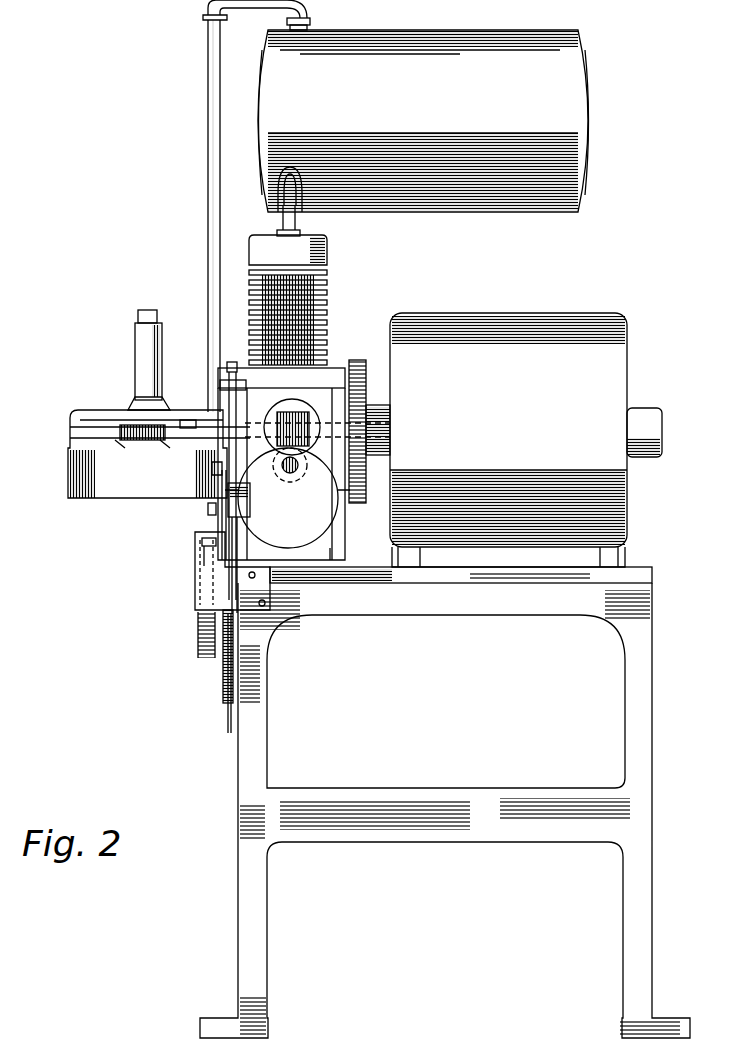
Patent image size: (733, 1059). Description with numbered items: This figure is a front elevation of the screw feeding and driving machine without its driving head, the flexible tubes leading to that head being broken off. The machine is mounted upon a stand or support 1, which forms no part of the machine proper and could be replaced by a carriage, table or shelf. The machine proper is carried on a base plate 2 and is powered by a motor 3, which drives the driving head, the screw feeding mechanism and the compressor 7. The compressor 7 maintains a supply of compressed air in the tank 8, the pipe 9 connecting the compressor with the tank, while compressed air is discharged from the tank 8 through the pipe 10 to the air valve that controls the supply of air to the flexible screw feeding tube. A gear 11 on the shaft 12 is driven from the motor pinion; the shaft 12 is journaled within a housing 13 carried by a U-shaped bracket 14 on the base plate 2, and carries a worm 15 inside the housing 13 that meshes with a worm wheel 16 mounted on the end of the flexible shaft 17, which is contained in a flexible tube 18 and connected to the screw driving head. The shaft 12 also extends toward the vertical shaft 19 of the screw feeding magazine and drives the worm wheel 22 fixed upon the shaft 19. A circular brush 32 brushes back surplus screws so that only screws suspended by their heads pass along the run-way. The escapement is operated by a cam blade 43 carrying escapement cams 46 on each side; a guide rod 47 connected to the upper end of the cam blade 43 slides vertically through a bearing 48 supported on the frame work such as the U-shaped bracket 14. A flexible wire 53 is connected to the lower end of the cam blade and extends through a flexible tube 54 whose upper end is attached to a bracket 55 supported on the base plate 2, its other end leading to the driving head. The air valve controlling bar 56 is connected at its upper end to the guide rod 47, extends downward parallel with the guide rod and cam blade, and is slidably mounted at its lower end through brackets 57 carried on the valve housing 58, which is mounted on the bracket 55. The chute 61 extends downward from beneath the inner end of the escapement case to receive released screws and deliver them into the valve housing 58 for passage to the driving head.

The stand or support 1 is at (630, 666).
The base plate 2 is at (633, 573).
The motor 3 is at (607, 370).
The compressor 7 is at (327, 295).
The tank 8 is at (423, 121).
The pipe 9 is at (299, 234).
The pipe 10 is at (212, 142).
The gear 11 is at (360, 362).
The shaft 12 is at (197, 417).
The housing 13 is at (323, 457).
The U-shaped bracket 14 is at (340, 548).
The worm 15 is at (296, 412).
The worm wheel 16 is at (287, 498).
The flexible shaft 17 is at (289, 473).
The flexible tube 18 is at (280, 475).
The vertical shaft 19 is at (149, 346).
The worm wheel 22 is at (110, 412).
The circular brush 32 is at (105, 440).
The cam blade 43 is at (227, 473).
The escapement cams 46 is at (242, 537).
The guide rod 47 is at (231, 362).
The bearing 48 is at (246, 385).
The flexible wire 53 is at (232, 580).
The flexible tube 54 is at (223, 673).
The bracket 55 is at (200, 605).
The air valve controlling bar 56 is at (217, 467).
The brackets 57 is at (207, 543).
The valve housing 58 is at (203, 550).
The chute 61 is at (213, 510).